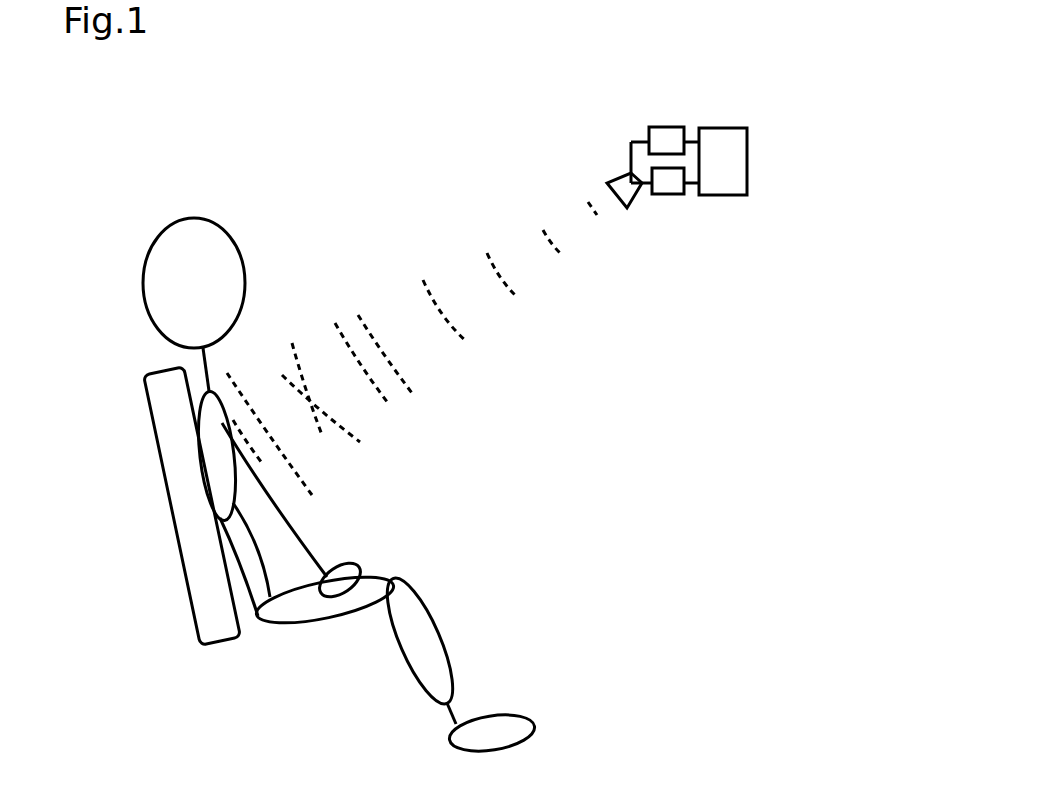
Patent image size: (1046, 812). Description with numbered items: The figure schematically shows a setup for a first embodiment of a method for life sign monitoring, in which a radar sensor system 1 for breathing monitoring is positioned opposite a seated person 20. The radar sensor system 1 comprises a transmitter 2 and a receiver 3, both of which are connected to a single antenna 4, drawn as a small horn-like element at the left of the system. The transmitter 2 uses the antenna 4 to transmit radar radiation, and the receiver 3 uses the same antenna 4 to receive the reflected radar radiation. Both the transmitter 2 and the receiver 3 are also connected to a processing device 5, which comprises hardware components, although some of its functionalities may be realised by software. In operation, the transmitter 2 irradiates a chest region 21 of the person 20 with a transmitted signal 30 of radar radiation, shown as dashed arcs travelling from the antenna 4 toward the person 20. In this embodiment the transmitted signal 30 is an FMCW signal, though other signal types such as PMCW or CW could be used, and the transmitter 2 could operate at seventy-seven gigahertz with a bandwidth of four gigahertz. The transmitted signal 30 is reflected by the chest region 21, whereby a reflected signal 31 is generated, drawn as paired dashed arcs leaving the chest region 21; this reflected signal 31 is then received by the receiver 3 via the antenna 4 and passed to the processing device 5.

The radar sensor system 1 is at (724, 98).
The transmitter 2 is at (666, 127).
The receiver 3 is at (668, 194).
The antenna 4 is at (611, 176).
The processing device 5 is at (731, 176).
The person 20 is at (168, 197).
The chest region 21 is at (193, 462).
The transmitted signal 30 is at (543, 230).
The reflected signal 31 is at (347, 333).